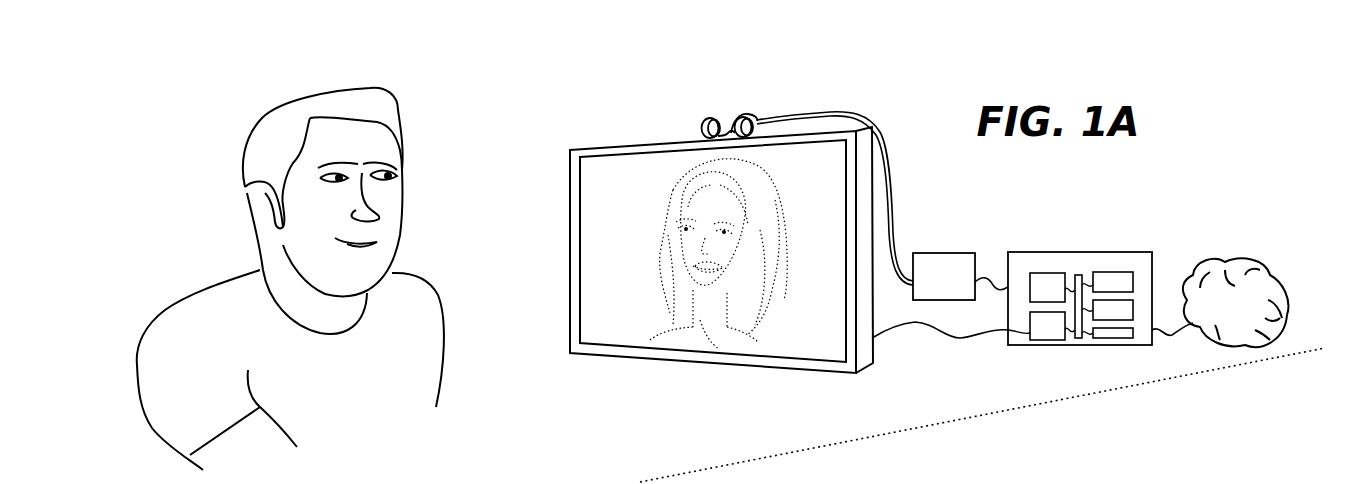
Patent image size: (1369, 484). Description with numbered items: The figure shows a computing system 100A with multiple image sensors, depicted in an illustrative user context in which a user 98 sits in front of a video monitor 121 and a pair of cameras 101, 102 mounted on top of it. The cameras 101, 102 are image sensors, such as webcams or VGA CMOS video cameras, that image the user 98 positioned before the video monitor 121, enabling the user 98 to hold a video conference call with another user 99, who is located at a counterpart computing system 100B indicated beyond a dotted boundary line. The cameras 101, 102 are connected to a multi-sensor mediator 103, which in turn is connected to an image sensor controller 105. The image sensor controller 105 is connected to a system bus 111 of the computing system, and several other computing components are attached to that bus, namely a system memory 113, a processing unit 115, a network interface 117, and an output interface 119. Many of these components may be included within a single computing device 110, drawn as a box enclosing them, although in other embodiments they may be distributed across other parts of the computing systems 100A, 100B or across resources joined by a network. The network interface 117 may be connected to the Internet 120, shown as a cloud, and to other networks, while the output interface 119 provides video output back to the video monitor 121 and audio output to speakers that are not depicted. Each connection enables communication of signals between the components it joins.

The user 98 is at (193, 158).
The user 99 is at (1272, 469).
The computing system 100A is at (1230, 163).
The computing system 100B is at (977, 483).
The camera 101 is at (703, 121).
The camera 102 is at (760, 113).
The multi-sensor mediator 103 is at (945, 252).
The image sensor controller 105 is at (1045, 272).
The computing device 110 is at (1088, 281).
The system bus 111 is at (1081, 275).
The system memory 113 is at (1113, 272).
The processing unit 115 is at (1133, 307).
The network interface 117 is at (1118, 338).
The output interface 119 is at (1033, 340).
The Internet 120 is at (1227, 258).
The video monitor 121 is at (632, 143).